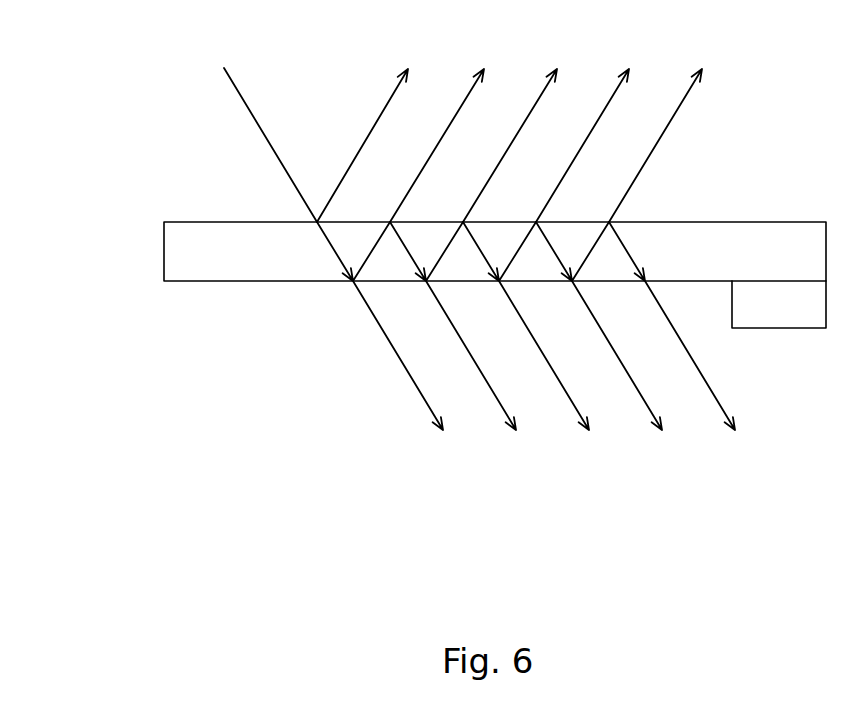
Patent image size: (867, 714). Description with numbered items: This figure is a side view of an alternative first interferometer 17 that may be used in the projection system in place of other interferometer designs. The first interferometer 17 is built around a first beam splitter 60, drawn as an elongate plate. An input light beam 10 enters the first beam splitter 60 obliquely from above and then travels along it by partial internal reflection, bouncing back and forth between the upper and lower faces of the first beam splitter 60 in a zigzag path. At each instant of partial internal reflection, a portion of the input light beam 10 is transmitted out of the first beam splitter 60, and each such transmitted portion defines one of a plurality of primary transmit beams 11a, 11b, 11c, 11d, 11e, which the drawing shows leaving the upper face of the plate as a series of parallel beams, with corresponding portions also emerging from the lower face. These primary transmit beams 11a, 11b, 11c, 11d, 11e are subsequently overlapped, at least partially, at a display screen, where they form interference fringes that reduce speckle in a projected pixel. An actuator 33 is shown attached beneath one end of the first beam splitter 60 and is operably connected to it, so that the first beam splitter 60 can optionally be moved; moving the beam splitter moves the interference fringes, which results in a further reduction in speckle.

The first interferometer 17 is at (120, 172).
The input light beam 10 is at (239, 95).
The first beam splitter 60 is at (180, 250).
The actuator 33 is at (788, 317).
The primary transmit beam 11a is at (394, 92).
The primary transmit beam 11b is at (468, 90).
The primary transmit beam 11c is at (541, 90).
The primary transmit beam 11d is at (614, 90).
The primary transmit beam 11e is at (687, 90).